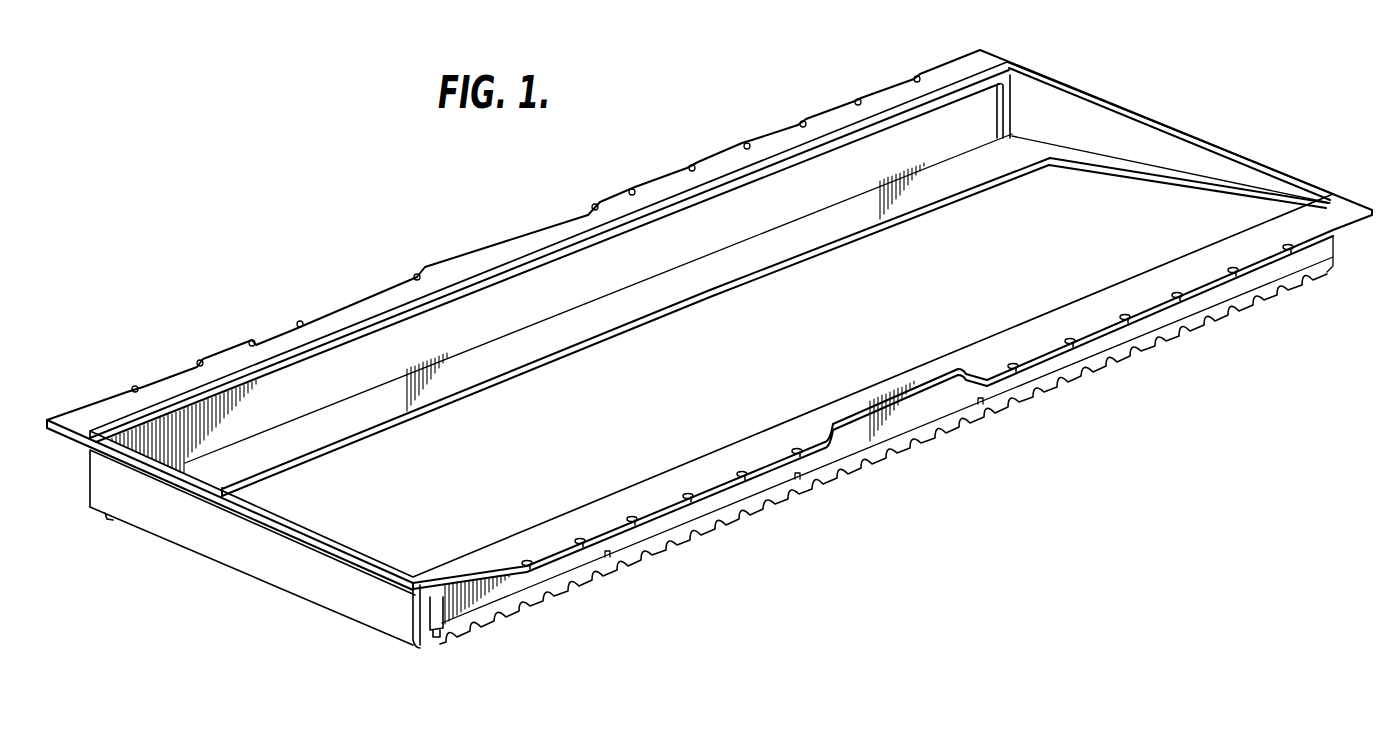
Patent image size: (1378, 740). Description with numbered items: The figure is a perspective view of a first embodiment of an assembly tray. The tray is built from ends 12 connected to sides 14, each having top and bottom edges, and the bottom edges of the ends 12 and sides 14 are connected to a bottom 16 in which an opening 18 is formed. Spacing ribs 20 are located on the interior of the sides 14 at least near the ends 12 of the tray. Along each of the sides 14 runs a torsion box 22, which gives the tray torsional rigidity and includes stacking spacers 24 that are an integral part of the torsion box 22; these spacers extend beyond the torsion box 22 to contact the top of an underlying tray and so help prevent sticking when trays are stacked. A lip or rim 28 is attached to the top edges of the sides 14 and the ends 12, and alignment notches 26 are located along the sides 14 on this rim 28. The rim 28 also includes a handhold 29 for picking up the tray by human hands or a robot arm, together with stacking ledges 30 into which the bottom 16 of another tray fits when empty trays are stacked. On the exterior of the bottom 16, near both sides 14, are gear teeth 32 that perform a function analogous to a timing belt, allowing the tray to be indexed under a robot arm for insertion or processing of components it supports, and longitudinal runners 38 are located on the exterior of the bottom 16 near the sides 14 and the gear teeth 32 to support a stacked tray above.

The ends 12 is at (1164, 158).
The sides 14 is at (780, 188).
The bottom 16 is at (962, 182).
The opening 18 is at (812, 332).
The spacing ribs 20 is at (1008, 130).
The torsion box 22 is at (733, 498).
The stacking spacers 24 is at (435, 630).
The alignment notches 26 is at (580, 540).
The rim 28 is at (1040, 345).
The handhold 29 is at (527, 242).
The stacking ledges 30 is at (163, 407).
The gear teeth 32 is at (847, 470).
The longitudinal runners 38 is at (404, 644).